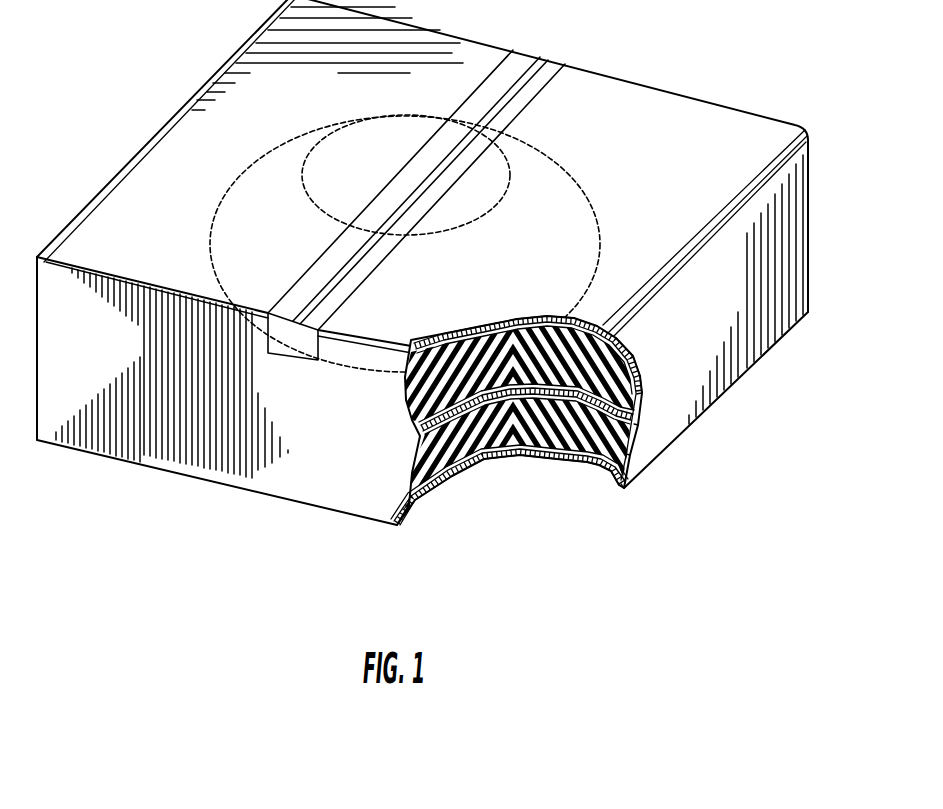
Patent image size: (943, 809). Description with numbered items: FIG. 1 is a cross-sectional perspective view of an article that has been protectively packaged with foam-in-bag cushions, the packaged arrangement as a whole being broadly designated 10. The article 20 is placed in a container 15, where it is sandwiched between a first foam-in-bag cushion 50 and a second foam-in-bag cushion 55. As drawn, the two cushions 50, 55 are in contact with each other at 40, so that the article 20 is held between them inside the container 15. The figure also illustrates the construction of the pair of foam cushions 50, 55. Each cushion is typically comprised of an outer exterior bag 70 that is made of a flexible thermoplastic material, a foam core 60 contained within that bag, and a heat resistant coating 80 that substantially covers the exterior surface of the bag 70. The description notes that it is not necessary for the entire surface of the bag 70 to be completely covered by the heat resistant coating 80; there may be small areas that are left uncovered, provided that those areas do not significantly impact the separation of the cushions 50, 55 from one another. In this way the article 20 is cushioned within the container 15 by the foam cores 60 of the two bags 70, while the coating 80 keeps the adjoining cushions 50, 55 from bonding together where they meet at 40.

The packaged article assembly 10 is at (91, 140).
The container 15 is at (180, 160).
The article 20 is at (557, 190).
The contact region 40 is at (638, 420).
The first foam-in-bag cushion 50 is at (412, 403).
The second foam-in-bag cushion 55 is at (483, 458).
The foam core 60 is at (613, 340).
The outer exterior bag 70 is at (553, 318).
The heat resistant coating 80 is at (473, 331).